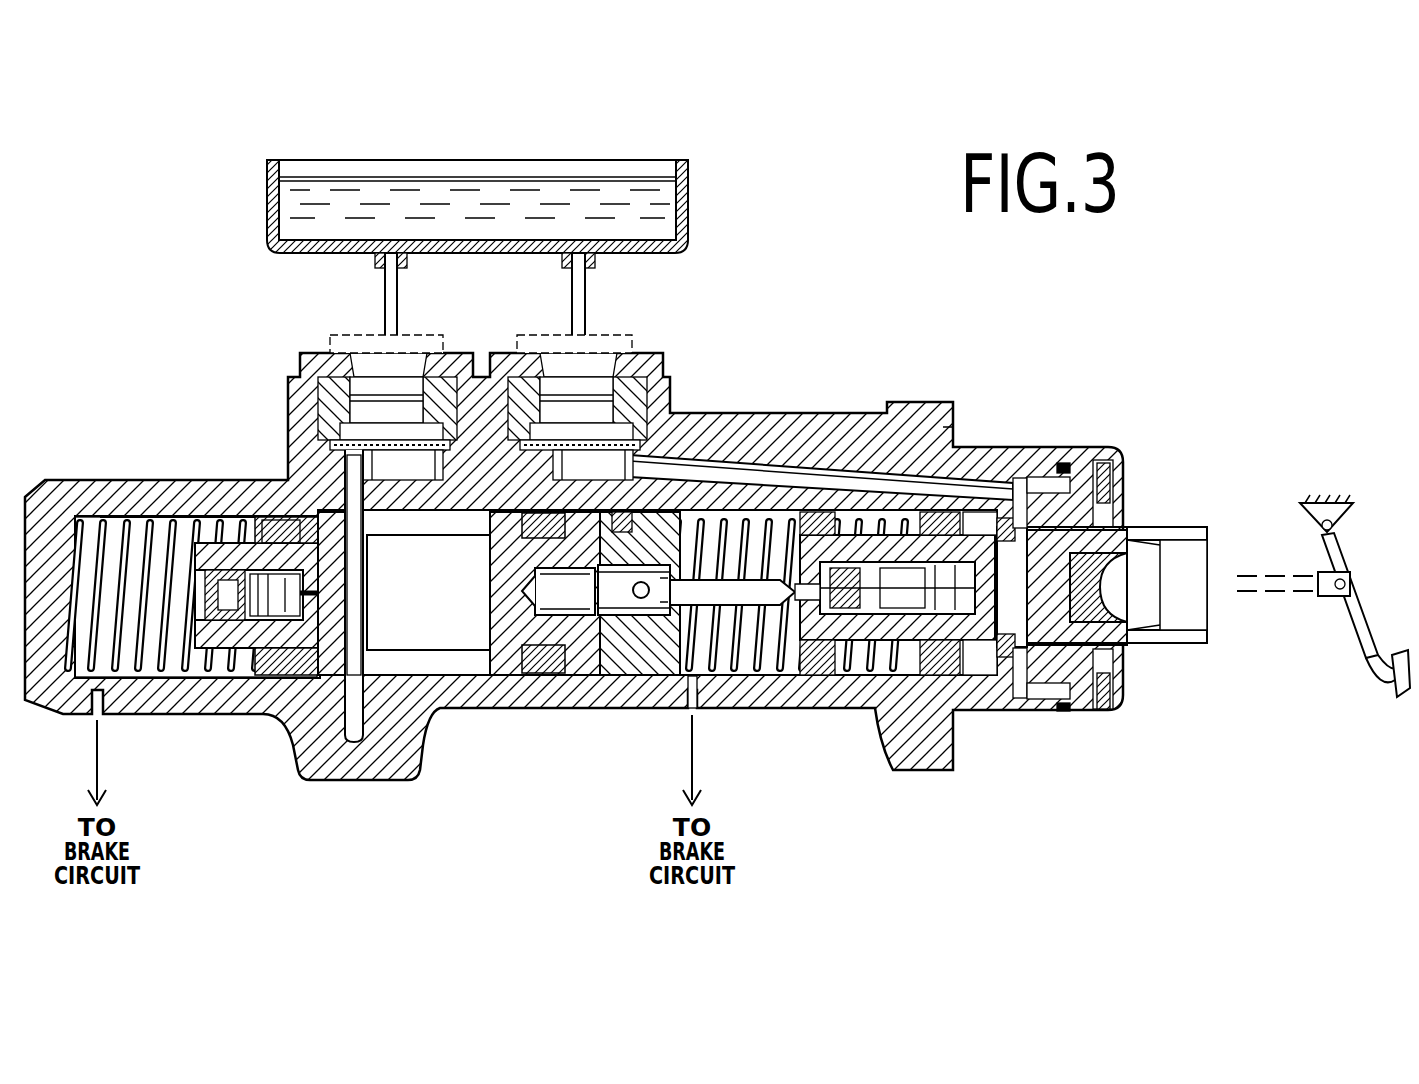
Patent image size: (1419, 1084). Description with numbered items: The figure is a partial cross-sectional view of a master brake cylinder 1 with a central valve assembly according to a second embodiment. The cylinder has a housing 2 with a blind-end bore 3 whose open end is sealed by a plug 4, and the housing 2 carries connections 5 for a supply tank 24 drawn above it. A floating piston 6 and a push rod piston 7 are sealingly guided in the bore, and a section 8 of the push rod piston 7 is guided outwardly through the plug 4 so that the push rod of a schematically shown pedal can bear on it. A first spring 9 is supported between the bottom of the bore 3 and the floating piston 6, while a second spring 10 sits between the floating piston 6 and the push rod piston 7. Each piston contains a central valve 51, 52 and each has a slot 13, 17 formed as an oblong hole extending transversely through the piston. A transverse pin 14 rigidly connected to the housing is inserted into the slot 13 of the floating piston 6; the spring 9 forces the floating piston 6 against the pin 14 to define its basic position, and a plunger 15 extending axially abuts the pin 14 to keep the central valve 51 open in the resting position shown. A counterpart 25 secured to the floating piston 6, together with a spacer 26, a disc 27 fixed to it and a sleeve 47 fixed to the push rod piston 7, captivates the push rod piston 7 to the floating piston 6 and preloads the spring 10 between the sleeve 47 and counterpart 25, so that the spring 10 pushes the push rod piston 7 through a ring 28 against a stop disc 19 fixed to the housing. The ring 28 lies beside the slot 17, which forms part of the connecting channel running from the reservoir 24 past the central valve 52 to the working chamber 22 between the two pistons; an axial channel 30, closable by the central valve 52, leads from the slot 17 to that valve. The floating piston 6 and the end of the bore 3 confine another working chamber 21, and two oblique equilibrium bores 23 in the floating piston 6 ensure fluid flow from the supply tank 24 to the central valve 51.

The master brake cylinder 1 is at (528, 750).
The housing 2 is at (905, 735).
The blind-end bore 3 is at (835, 645).
The plug 4 is at (1128, 655).
The connections 5 is at (540, 353).
The floating piston 6 is at (265, 543).
The push rod piston 7 is at (850, 485).
The section of the push rod piston 8 is at (1178, 527).
The first spring 9 is at (175, 660).
The second spring 10 is at (742, 672).
The slot 13 is at (448, 640).
The transverse pin 14 is at (330, 740).
The plunger 15 is at (320, 647).
The slot 17 is at (1075, 712).
The stop disc 19 is at (1012, 527).
The working chamber 21 is at (135, 665).
The working chamber 22 is at (692, 676).
The oblique equilibrium bores 23 is at (335, 510).
The supply tank 24 is at (688, 195).
The counterpart 25 is at (612, 650).
The spacer 26 is at (675, 610).
The disc 27 is at (815, 675).
The ring 28 is at (1003, 518).
The axial channel 30 is at (978, 675).
The sleeve 47 is at (250, 525).
The central valve 51 is at (262, 616).
The central valve 52 is at (940, 675).